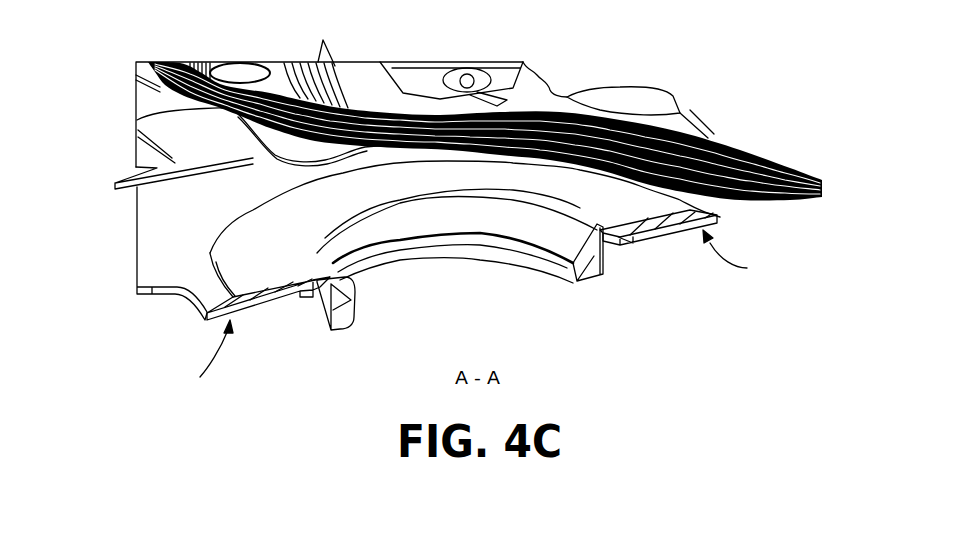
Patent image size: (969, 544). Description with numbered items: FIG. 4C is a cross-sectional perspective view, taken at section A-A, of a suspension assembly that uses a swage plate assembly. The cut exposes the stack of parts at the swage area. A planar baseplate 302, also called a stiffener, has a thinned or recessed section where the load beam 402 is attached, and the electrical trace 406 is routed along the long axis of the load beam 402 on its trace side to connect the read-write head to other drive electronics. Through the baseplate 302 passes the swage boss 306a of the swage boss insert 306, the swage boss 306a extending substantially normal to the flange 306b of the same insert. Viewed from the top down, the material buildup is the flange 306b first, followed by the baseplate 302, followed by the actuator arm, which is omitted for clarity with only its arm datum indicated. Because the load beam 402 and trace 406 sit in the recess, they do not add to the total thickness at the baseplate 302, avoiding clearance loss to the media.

The load beam 402 is at (441, 120).
The electrical trace 406 is at (783, 164).
The baseplate 302 is at (150, 270).
The swage boss insert 306 is at (465, 283).
The swage boss 306a is at (365, 316).
The flange 306b is at (301, 243).